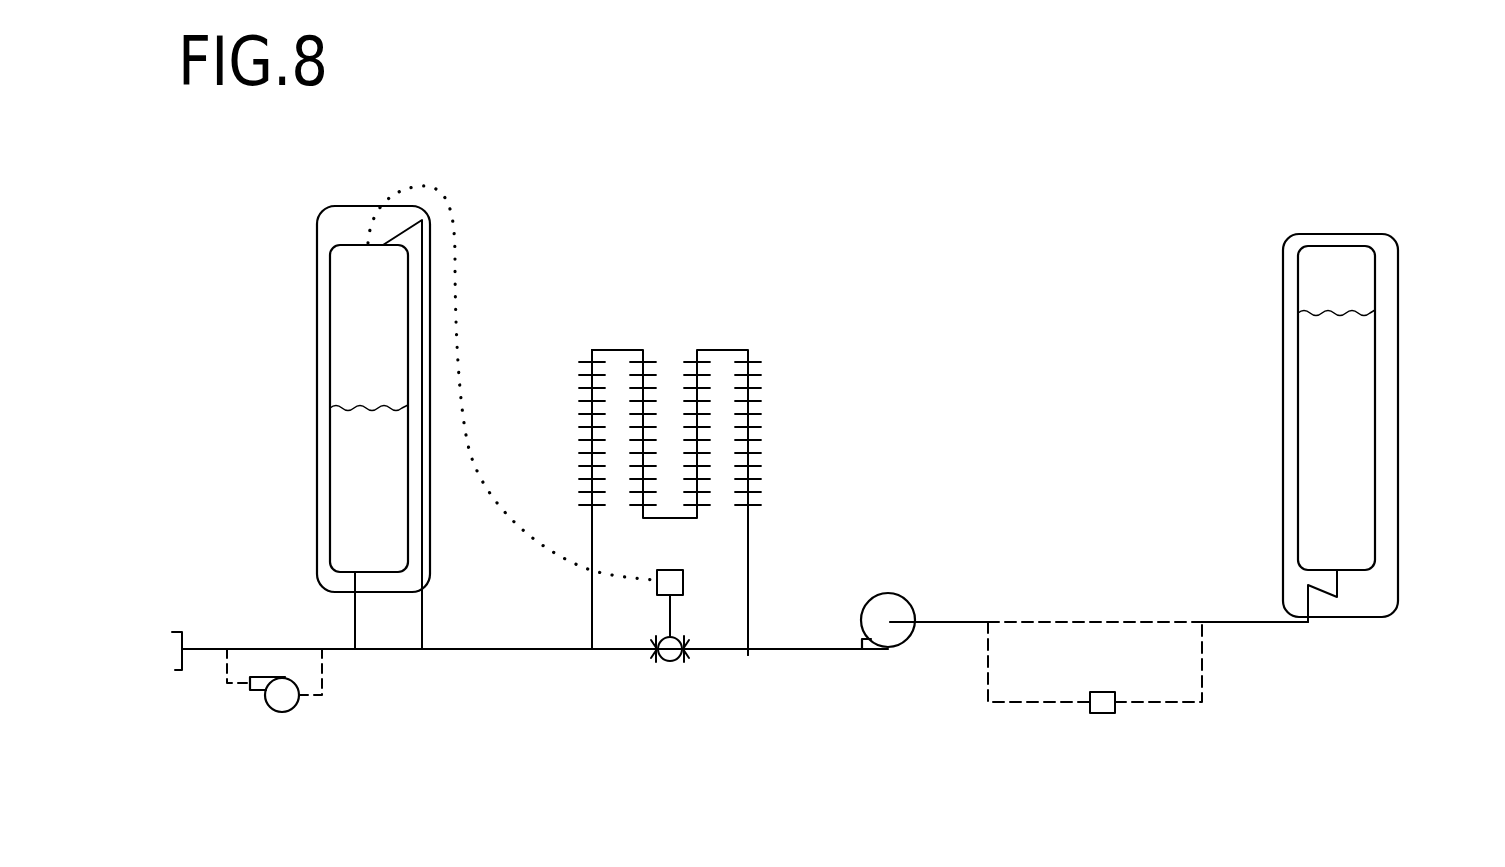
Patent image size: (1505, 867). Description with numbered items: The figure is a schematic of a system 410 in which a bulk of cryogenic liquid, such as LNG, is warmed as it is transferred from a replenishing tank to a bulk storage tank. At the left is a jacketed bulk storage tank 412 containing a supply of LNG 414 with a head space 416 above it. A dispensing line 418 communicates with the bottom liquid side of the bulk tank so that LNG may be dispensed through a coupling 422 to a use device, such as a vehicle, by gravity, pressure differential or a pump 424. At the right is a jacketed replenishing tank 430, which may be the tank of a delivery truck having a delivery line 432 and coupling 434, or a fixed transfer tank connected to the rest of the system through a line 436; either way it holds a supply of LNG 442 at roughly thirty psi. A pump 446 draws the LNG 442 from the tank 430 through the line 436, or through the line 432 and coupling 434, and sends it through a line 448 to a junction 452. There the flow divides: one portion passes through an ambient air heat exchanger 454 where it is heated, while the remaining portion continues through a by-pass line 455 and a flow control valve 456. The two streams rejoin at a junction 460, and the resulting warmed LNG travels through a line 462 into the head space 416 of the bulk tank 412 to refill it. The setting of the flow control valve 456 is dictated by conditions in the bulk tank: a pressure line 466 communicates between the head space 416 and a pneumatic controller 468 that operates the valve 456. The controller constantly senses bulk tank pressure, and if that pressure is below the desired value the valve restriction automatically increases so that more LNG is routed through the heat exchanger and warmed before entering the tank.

The system 410 is at (889, 108).
The jacketed bulk storage tank 412 is at (317, 430).
The supply of LNG 414 is at (383, 484).
The head space 416 is at (383, 339).
The dispensing line 418 is at (355, 628).
The coupling 422 is at (182, 670).
The pump 424 is at (288, 712).
The jacketed replenishing tank 430 is at (1398, 365).
The delivery line 432 is at (1205, 672).
The coupling 434 is at (1110, 715).
The line 436 is at (1045, 620).
The supply of LNG 442 is at (1357, 373).
The pump 446 is at (906, 641).
The line 448 is at (797, 645).
The junction 452 is at (748, 652).
The ambient air heat exchanger 454 is at (762, 370).
The by-pass line 455 is at (712, 650).
The flow control valve 456 is at (672, 661).
The junction 460 is at (592, 650).
The line 462 is at (443, 650).
The pressure line 466 is at (472, 452).
The pneumatic controller 468 is at (664, 570).